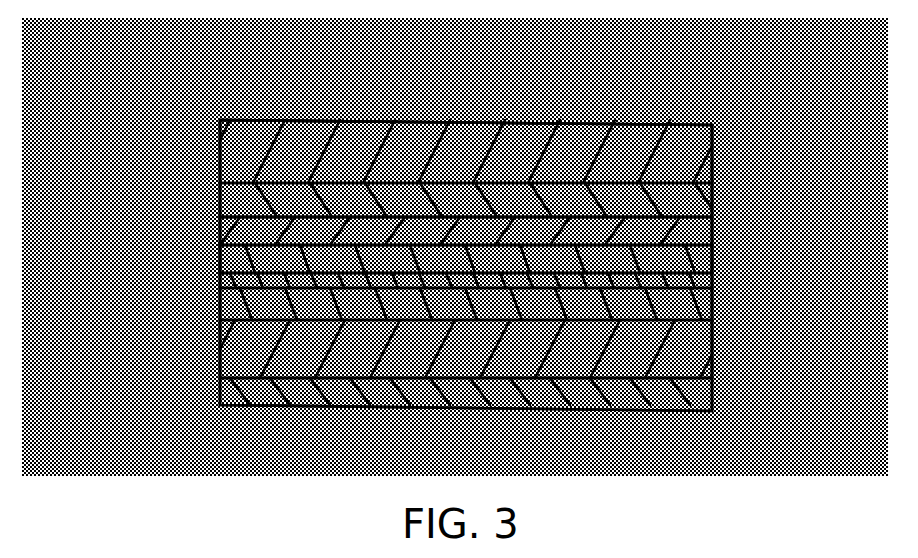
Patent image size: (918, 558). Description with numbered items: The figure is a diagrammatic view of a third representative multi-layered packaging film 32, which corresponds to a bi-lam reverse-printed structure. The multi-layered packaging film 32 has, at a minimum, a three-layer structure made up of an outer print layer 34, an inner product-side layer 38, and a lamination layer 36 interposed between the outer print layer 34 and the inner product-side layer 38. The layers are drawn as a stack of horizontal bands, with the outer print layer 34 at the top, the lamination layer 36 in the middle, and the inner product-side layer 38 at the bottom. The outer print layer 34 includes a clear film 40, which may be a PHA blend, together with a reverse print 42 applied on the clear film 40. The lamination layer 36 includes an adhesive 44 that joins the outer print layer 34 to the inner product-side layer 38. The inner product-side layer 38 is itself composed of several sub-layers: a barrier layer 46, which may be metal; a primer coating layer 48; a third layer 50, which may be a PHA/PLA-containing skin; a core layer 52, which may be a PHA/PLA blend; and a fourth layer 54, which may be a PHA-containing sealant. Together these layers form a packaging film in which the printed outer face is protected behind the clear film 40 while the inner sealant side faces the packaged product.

The multi-layered packaging film 32 is at (167, 73).
The outer print layer 34 is at (197, 120).
The lamination layer 36 is at (730, 224).
The inner product-side layer 38 is at (204, 369).
The clear film 40 is at (712, 162).
The reverse print 42 is at (708, 212).
The adhesive 44 is at (220, 226).
The barrier layer 46 is at (700, 268).
The primer coating layer 48 is at (705, 290).
The third layer 50 is at (710, 320).
The core layer 52 is at (715, 360).
The fourth layer 54 is at (715, 402).